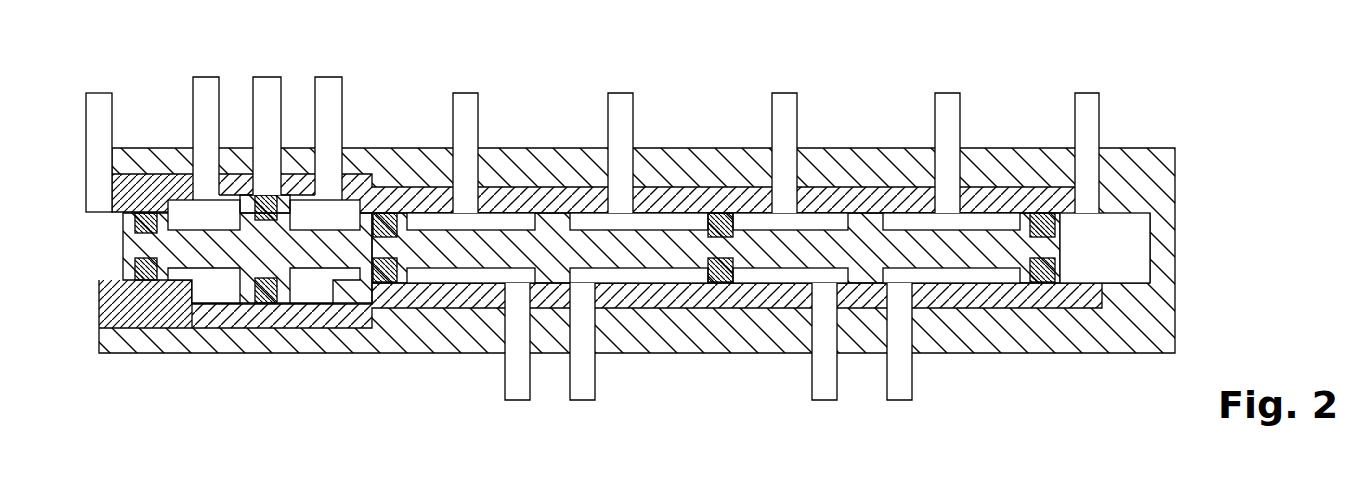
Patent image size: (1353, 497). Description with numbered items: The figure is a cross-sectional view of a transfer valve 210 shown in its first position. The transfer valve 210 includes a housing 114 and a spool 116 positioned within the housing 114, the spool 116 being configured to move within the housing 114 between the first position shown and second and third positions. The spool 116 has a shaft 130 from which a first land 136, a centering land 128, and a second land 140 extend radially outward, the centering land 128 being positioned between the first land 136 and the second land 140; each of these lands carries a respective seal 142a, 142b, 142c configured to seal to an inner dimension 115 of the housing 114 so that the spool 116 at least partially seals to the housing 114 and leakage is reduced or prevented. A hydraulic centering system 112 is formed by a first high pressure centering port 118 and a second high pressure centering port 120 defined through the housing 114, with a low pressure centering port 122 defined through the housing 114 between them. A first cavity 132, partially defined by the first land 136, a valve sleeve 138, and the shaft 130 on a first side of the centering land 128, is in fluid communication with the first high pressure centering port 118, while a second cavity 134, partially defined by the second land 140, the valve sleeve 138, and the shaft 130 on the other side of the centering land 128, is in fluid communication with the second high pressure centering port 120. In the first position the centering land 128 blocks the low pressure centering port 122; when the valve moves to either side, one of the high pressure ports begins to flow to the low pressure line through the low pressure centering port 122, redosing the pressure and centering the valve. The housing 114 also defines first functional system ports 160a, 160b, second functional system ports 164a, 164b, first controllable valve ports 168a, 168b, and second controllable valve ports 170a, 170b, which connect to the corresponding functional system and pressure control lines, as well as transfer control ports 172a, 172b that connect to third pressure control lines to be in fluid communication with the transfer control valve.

The transfer valve 210 is at (666, 231).
The housing 114 is at (646, 233).
The hydraulic centering system 112 is at (232, 287).
The inner dimension 115 is at (687, 210).
The spool 116 is at (1053, 252).
The first high pressure centering port 118 is at (197, 113).
The second high pressure centering port 120 is at (338, 110).
The low pressure centering port 122 is at (251, 120).
The centering land 128 is at (290, 195).
The shaft 130 is at (242, 270).
The first cavity 132 is at (218, 225).
The second cavity 134 is at (339, 225).
The first land 136 is at (570, 259).
The valve sleeve 138 is at (1003, 197).
The second land 140 is at (403, 207).
The seal 142a is at (131, 225).
The seal 142b is at (272, 305).
The seal 142c is at (393, 285).
The first functional system port 160a is at (519, 401).
The first functional system port 160b is at (829, 401).
The second functional system port 164a is at (584, 401).
The second functional system port 164b is at (898, 401).
The first controllable valve port 168a is at (482, 132).
The first controllable valve port 168b is at (797, 115).
The second controllable valve port 170a is at (636, 130).
The second controllable valve port 170b is at (962, 115).
The transfer control port 172a is at (98, 93).
The transfer control port 172b is at (1099, 112).